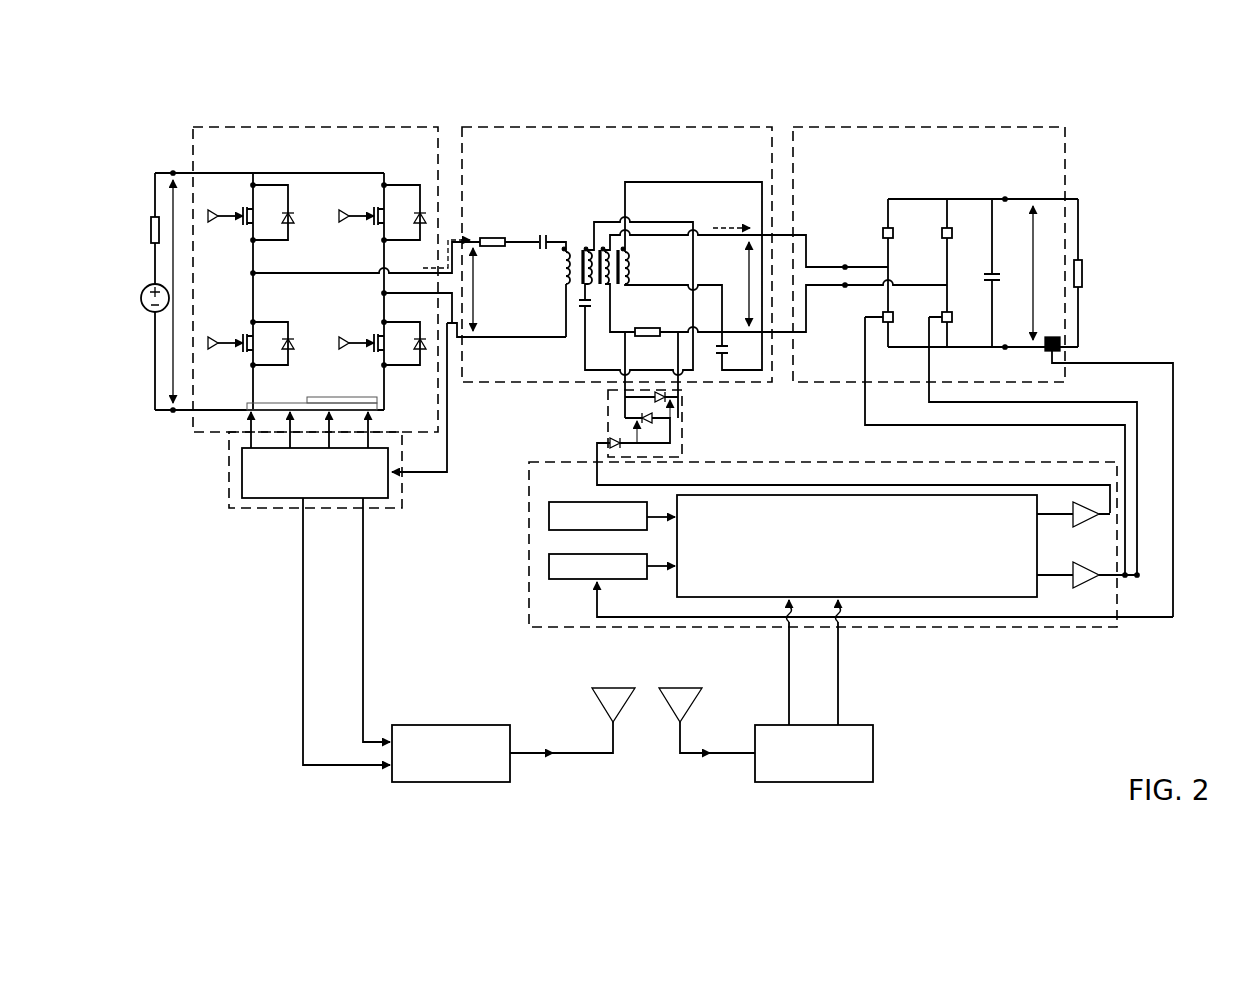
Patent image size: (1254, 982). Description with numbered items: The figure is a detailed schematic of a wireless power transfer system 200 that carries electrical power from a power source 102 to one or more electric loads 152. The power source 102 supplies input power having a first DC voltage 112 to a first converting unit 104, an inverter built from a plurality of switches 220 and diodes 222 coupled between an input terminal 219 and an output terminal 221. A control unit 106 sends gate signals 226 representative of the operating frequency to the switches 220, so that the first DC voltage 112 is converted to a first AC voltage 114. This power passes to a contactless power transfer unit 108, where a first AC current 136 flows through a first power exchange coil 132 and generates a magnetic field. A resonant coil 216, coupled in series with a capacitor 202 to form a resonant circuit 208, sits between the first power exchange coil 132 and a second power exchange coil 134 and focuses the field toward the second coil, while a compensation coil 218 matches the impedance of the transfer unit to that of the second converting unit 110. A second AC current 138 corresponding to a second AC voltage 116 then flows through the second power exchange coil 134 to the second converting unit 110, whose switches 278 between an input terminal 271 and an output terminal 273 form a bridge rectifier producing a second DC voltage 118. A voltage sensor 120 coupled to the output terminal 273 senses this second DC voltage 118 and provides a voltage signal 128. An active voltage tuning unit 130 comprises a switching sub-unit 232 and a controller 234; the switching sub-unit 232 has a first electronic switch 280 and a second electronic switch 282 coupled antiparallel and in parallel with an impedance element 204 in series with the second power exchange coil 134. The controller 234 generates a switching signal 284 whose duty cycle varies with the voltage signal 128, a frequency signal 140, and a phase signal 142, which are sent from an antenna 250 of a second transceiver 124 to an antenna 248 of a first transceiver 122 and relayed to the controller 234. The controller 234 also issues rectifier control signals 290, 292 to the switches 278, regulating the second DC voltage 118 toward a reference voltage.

The wireless power transfer system 200 is at (1133, 95).
The power source 102 is at (141, 295).
The first converting unit 104 is at (312, 126).
The control unit 106 is at (229, 490).
The contactless power transfer unit 108 is at (588, 126).
The second converting unit 110 is at (922, 126).
The first DC voltage 112 is at (170, 352).
The first AC voltage 114 is at (473, 330).
The second AC voltage 116 is at (748, 285).
The second DC voltage 118 is at (1031, 225).
The voltage sensor 120 is at (1060, 340).
The first transceiver 122 is at (873, 776).
The second transceiver 124 is at (510, 776).
The voltage signal 128 is at (597, 600).
The active voltage tuning unit 130 is at (529, 490).
The first power exchange coil 132 is at (565, 262).
The second power exchange coil 134 is at (592, 250).
The first AC current 136 is at (446, 262).
The second AC current 138 is at (713, 228).
The frequency signal 140 is at (303, 633).
The phase signal 142 is at (363, 625).
The electric loads 152 is at (1082, 268).
The capacitor 202 is at (582, 303).
The impedance element 204 is at (648, 330).
The resonant circuit 208 is at (599, 301).
The resonant coil 216 is at (586, 275).
The compensation coil 218 is at (655, 265).
The input terminal 219 is at (173, 170).
The switches 220 is at (240, 226).
The output terminal 221 is at (384, 293).
The diodes 222 is at (294, 224).
The gate signals 226 is at (377, 402).
The switching sub-unit 232 is at (852, 460).
The controller 234 is at (857, 494).
The antenna 248 is at (668, 688).
The antenna 250 is at (598, 688).
The input terminal 271 is at (845, 285).
The output terminal 273 is at (1005, 199).
The switches 278 is at (893, 233).
The first electronic switch 280 is at (668, 397).
The second electronic switch 282 is at (640, 418).
The switching signal 284 is at (608, 443).
The rectifier control signal 290 is at (1083, 400).
The rectifier control signal 292 is at (1037, 427).